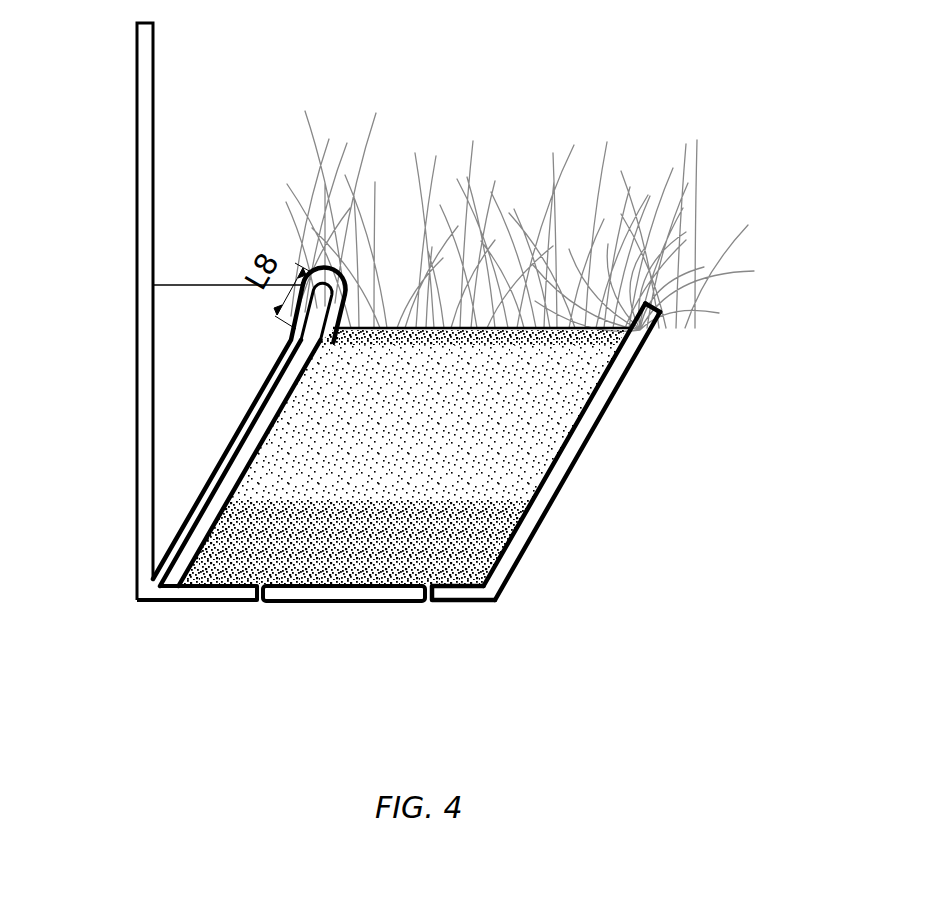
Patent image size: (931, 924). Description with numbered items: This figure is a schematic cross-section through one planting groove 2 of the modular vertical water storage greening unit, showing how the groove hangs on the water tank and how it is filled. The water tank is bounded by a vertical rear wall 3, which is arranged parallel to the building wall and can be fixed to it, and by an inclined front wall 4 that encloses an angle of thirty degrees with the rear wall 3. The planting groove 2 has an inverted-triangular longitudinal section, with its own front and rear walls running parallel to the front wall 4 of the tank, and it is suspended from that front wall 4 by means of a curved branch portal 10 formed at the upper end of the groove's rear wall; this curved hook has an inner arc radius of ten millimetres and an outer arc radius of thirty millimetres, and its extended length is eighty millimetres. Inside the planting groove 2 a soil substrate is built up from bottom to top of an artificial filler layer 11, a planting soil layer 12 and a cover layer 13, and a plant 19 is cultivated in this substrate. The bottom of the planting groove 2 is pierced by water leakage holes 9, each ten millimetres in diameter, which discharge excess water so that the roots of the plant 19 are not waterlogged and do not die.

The planting groove 2 is at (403, 605).
The rear wall of the water tank 3 is at (147, 265).
The front wall of the water tank 4 is at (180, 535).
The water leakage hole 9 is at (262, 602).
The curved branch portal 10 is at (337, 287).
The artificial filler layer 11 is at (488, 547).
The planting soil layer 12 is at (535, 417).
The cover layer 13 is at (608, 368).
The plant 19 is at (640, 300).